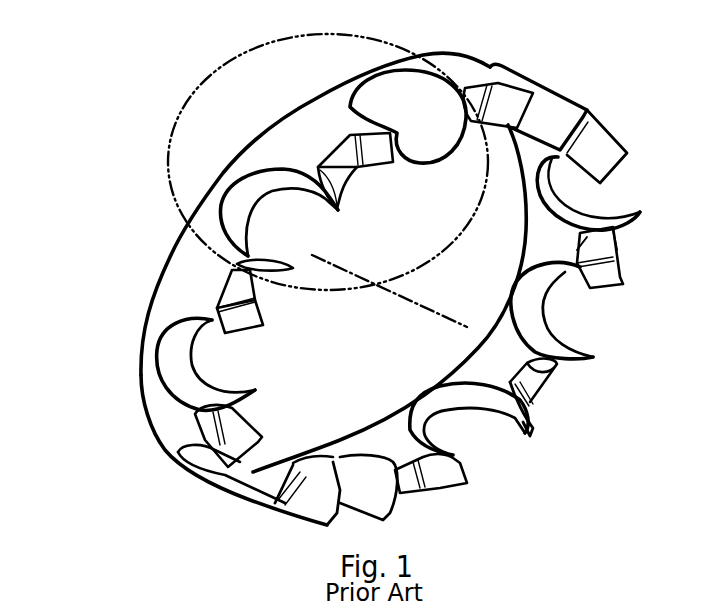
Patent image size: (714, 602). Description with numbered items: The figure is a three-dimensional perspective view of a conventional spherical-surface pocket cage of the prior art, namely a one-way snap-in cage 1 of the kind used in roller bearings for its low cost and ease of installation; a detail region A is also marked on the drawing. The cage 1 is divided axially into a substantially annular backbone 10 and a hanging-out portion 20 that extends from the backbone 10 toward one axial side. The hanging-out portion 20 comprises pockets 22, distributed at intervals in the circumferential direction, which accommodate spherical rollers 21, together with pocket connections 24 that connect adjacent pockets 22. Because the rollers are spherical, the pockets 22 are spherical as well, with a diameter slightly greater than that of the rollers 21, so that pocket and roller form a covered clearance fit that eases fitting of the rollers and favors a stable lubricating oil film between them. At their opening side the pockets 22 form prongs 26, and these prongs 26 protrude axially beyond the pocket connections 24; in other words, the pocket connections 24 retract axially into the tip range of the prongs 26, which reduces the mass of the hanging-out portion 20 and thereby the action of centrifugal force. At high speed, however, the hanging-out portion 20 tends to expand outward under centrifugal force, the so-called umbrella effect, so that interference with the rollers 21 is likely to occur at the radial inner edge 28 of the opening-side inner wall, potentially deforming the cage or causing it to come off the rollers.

The one-way snap-in cage 1 is at (576, 36).
The detail region A is at (232, 64).
The backbone 10 is at (176, 272).
The hanging-out portion 20 is at (226, 312).
The spherical roller 21 is at (427, 147).
The pocket 22 is at (236, 217).
The pocket connection 24 is at (250, 290).
The prong 26 is at (210, 300).
The radial inner edge 28 is at (213, 372).